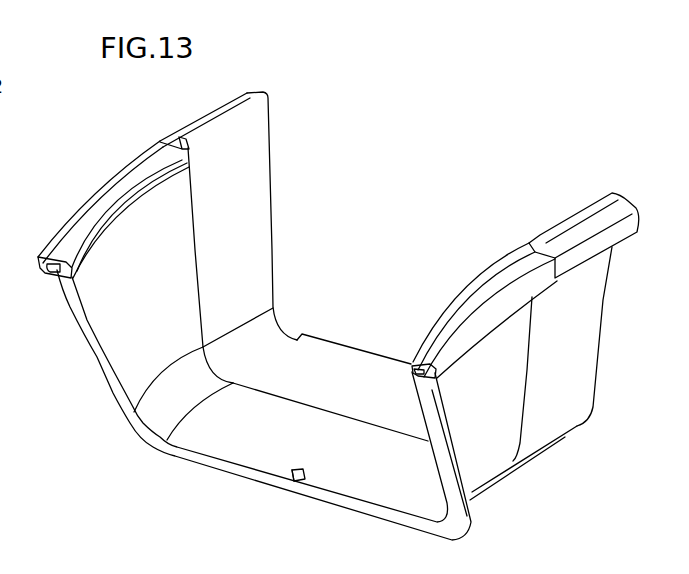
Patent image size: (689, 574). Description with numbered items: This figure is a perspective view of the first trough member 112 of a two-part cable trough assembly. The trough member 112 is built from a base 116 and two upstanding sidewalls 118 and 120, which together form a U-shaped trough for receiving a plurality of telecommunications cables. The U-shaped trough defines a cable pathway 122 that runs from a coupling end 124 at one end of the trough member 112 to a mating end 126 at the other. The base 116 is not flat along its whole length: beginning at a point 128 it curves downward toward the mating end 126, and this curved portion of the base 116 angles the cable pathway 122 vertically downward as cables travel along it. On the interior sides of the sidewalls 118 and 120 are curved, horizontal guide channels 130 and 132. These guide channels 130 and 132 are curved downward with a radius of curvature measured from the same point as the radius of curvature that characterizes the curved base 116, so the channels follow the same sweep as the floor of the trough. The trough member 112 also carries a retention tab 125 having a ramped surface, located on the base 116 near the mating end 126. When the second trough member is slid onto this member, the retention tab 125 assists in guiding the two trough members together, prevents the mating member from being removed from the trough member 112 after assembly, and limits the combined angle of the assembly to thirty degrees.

The trough member 112 is at (367, 153).
The base 116 is at (298, 358).
The sidewall 118 is at (577, 347).
The sidewall 120 is at (243, 175).
The cable pathway 122 is at (291, 449).
The coupling end 124 is at (328, 338).
The retention tab 125 is at (305, 477).
The mating end 126 is at (215, 463).
The point 128 is at (247, 388).
The guide channel 130 is at (423, 377).
The guide channel 132 is at (58, 268).